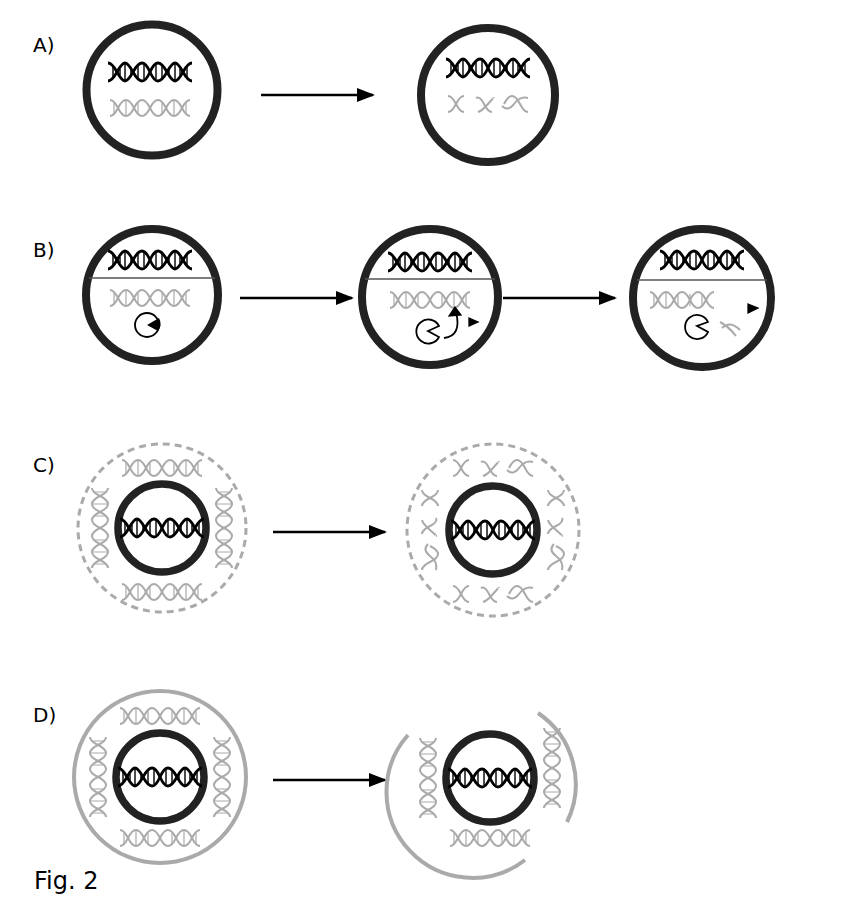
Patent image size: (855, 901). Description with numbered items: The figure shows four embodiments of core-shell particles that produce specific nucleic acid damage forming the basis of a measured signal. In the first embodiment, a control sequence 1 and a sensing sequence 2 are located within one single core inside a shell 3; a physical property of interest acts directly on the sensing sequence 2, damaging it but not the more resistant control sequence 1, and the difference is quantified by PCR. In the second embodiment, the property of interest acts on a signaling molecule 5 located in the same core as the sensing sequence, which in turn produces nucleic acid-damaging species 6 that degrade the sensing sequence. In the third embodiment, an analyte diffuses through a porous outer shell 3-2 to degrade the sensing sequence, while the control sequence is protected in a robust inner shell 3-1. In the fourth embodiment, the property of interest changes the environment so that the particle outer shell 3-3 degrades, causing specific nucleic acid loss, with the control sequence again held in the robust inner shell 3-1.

The control sequence 1 is at (180, 58).
The sensing sequence 2 is at (190, 122).
The shell 3 is at (178, 154).
The signaling molecule 5 is at (163, 335).
The nucleic acid-damaging species 6 is at (415, 340).
The robust inner shell 3-1 is at (192, 492).
The porous outer shell 3-2 is at (242, 507).
The particle outer shell 3-3 is at (240, 752).